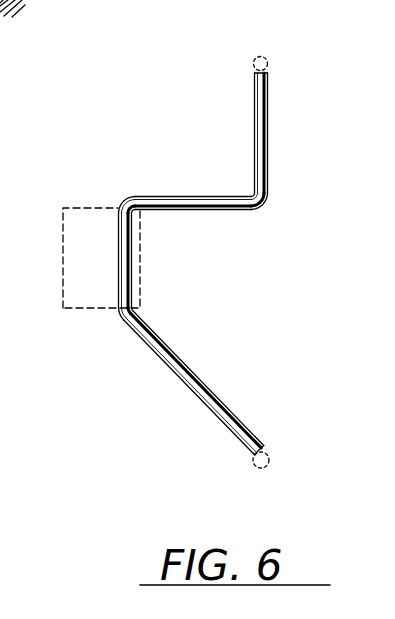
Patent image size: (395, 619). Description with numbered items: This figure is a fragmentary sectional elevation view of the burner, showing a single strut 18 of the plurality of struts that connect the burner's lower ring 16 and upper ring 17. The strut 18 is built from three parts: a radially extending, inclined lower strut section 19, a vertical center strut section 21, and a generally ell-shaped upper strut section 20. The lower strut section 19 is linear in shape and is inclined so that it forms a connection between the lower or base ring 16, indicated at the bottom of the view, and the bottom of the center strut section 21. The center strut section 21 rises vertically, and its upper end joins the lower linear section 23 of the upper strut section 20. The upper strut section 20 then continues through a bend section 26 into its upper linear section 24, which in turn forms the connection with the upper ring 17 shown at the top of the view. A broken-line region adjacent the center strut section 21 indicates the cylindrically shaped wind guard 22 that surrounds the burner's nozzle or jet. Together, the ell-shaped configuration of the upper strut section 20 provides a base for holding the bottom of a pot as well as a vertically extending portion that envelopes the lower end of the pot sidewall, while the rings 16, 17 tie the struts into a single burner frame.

The lower ring 16 is at (27, 0).
The upper ring 17 is at (259, 56).
The strut 18 is at (133, 259).
The lower strut section 19 is at (162, 361).
The upper strut section 20 is at (254, 126).
The vertical center strut section 21 is at (118, 292).
The wind guard 22 is at (63, 232).
The lower linear section 23 is at (157, 197).
The upper linear section 24 is at (269, 101).
The bend section 26 is at (263, 205).